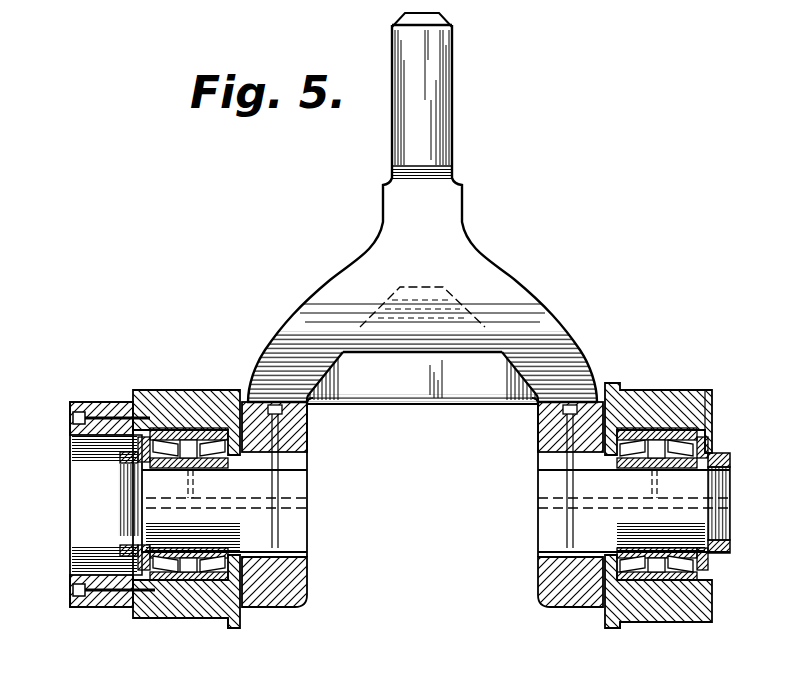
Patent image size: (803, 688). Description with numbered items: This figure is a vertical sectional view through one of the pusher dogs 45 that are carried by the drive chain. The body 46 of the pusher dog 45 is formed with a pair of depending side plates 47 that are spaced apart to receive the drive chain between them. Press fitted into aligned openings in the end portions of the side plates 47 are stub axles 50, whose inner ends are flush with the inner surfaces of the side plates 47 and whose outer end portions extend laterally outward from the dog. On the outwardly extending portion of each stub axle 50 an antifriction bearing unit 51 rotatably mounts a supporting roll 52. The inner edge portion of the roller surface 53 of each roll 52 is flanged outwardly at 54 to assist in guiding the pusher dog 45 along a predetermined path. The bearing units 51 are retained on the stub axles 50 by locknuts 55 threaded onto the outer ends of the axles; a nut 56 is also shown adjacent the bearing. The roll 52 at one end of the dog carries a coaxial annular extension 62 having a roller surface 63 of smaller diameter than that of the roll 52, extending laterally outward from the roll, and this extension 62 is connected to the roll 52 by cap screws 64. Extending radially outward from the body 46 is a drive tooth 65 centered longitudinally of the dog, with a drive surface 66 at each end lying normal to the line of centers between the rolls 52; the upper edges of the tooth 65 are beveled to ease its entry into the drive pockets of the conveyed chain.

The pusher dog 45 is at (514, 276).
The body 46 is at (531, 318).
The side plates 47 is at (312, 590).
The stub axles 50 is at (308, 476).
The antifriction bearing unit 51 is at (188, 440).
The supporting roll 52 is at (165, 620).
The roller surface 53 is at (190, 620).
The flange 54 is at (236, 630).
The locknuts 55 is at (130, 453).
The lock nut 56 is at (134, 563).
The annular extensions 62 is at (88, 608).
The roller surfaces 63 is at (119, 608).
The cap screws 64 is at (73, 418).
The drive tooth 65 is at (453, 104).
The drive surface 66 is at (440, 70).